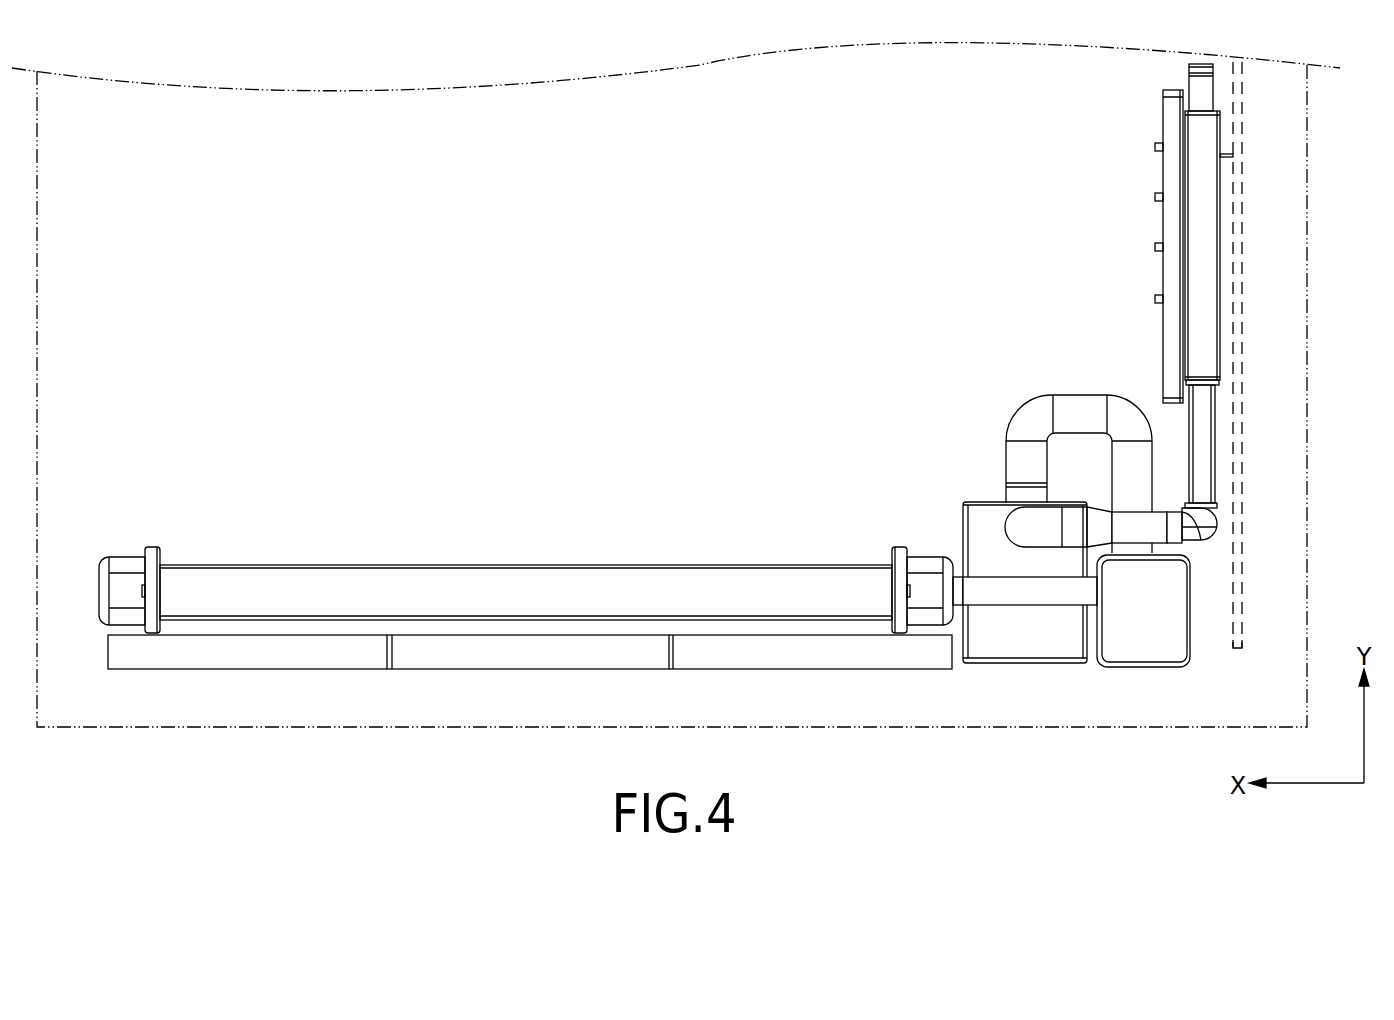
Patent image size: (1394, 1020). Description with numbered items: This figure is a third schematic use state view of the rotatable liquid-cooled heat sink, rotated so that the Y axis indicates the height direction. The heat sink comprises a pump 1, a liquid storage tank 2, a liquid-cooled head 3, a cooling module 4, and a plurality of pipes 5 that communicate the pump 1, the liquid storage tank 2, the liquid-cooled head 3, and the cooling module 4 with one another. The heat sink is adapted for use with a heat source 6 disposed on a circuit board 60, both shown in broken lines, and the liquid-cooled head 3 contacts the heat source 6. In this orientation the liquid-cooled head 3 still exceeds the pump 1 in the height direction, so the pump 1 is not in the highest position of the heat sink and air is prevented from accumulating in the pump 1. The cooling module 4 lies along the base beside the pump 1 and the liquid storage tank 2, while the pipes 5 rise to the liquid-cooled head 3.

The pump 1 is at (1022, 647).
The liquid storage tank 2 is at (1167, 630).
The liquid-cooled head 3 is at (1205, 245).
The cooling module 4 is at (513, 662).
The pipes 5 is at (1202, 430).
The heat source 6 is at (1228, 185).
The circuit board 60 is at (1242, 364).